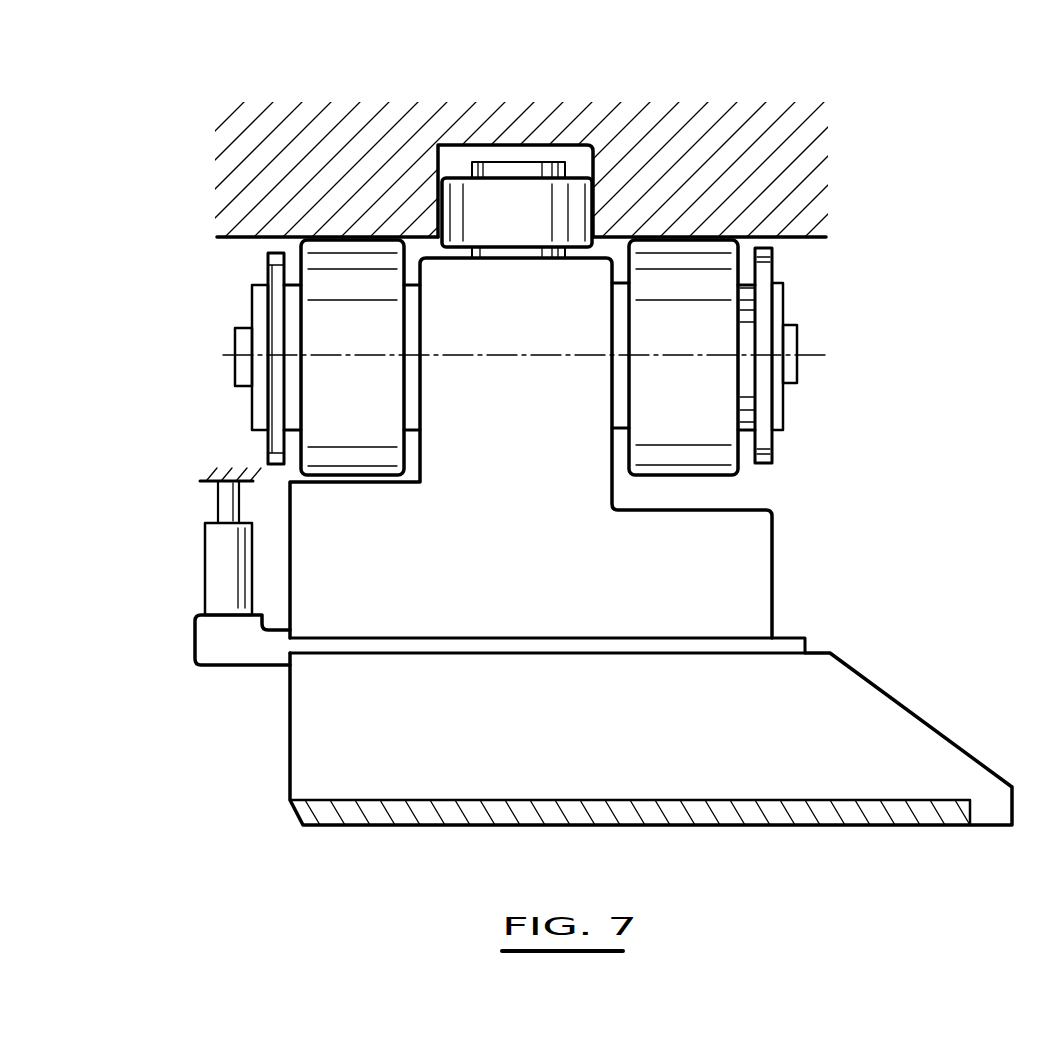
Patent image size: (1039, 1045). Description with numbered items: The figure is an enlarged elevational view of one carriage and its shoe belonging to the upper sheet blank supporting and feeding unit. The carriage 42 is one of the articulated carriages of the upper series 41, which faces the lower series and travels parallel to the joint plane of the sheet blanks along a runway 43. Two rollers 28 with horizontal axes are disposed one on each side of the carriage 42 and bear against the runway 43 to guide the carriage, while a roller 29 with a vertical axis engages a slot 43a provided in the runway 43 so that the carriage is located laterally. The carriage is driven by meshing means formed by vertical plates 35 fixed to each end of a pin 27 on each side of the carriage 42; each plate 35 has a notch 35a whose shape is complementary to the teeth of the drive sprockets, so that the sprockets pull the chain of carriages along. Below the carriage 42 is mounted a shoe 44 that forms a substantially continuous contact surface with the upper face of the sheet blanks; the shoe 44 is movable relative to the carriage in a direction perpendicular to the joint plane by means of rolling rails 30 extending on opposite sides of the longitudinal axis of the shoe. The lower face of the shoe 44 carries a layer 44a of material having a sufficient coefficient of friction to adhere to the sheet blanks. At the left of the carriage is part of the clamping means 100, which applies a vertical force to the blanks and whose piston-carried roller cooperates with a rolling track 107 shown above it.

The pin 27 is at (778, 366).
The roller 28 is at (318, 262).
The roller 29 is at (529, 200).
The rolling rail 30 is at (807, 643).
The vertical plate 35 is at (277, 343).
The notch 35a is at (275, 308).
The upper series 41 is at (912, 604).
The carriage 42 is at (752, 560).
The runway 43 is at (757, 152).
The slot 43a is at (583, 150).
The shoe 44 is at (893, 725).
The layer 44a is at (815, 812).
The clamping means 100 is at (183, 597).
The rolling track 107 is at (220, 476).